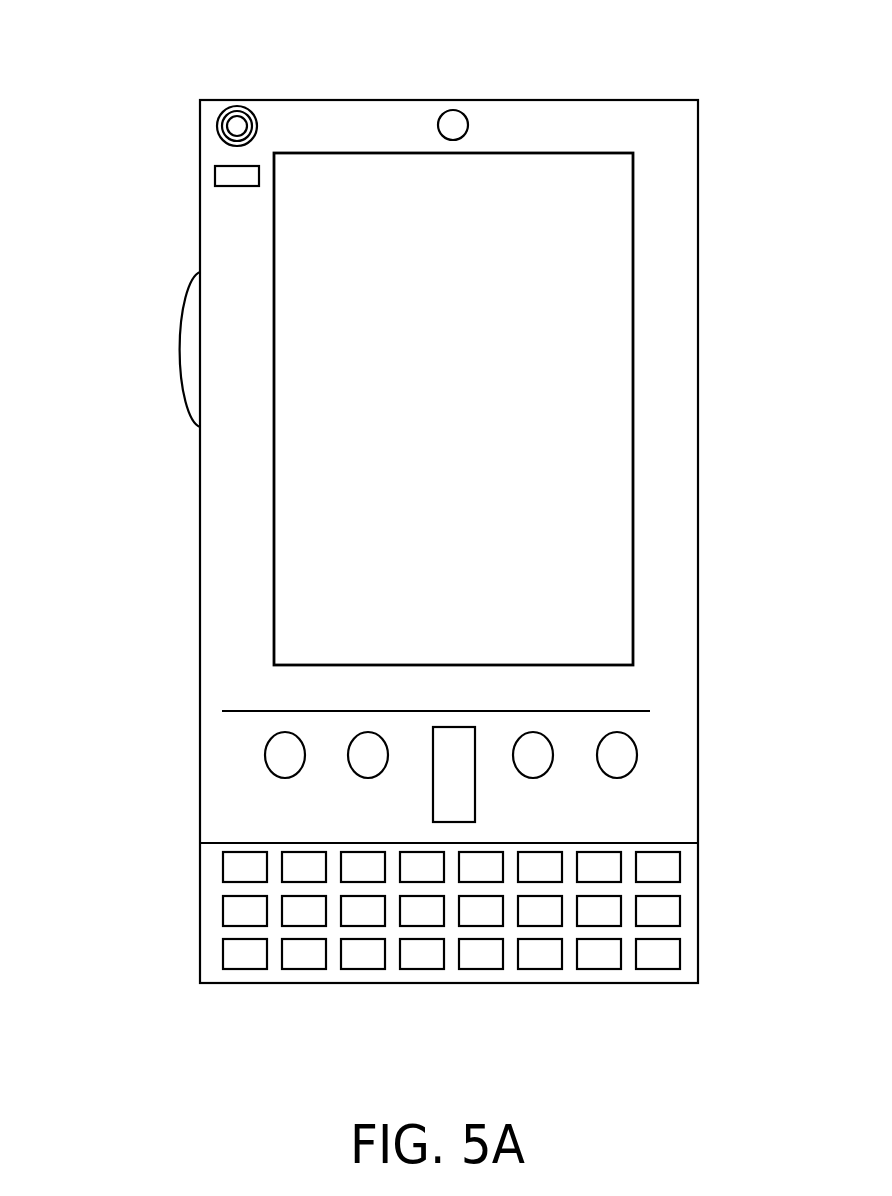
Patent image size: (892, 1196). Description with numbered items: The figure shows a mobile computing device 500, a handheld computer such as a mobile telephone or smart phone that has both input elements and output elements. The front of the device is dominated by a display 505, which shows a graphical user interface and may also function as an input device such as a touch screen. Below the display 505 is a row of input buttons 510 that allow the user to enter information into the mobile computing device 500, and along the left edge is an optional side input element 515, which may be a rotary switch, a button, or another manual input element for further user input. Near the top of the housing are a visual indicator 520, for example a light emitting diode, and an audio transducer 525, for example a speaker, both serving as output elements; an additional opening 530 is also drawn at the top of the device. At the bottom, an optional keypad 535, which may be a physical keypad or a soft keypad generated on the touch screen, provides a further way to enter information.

The mobile computing device 500 is at (685, 118).
The display 505 is at (385, 578).
The input buttons 510 is at (452, 780).
The side input element 515 is at (190, 349).
The visual indicator 520 is at (216, 178).
The audio transducer 525 is at (216, 127).
The speaker 530 is at (466, 122).
The keypad 535 is at (210, 959).